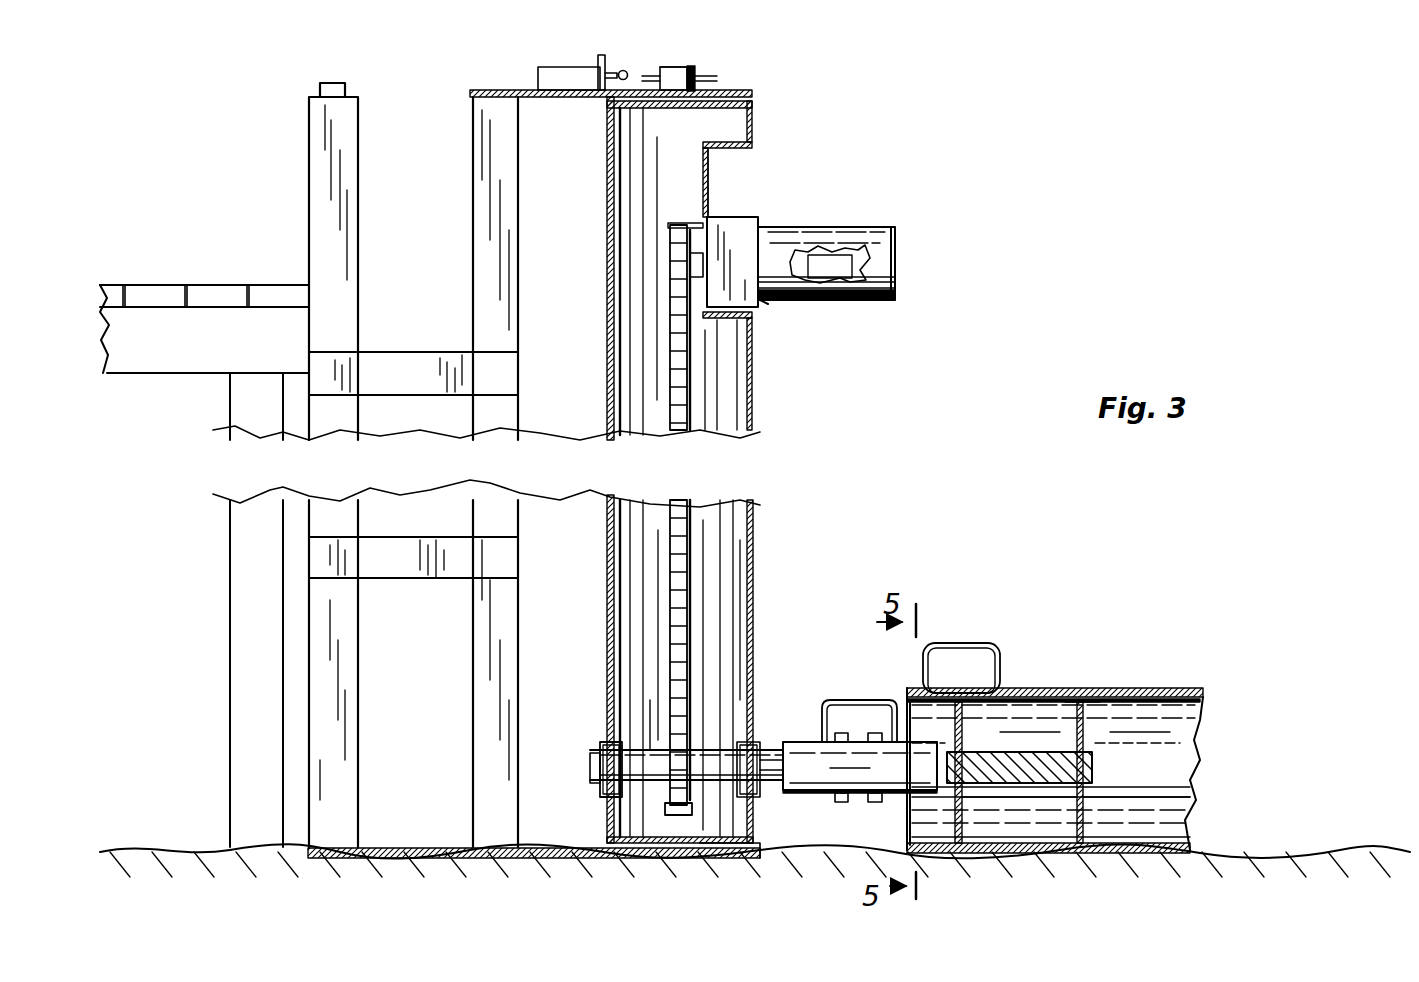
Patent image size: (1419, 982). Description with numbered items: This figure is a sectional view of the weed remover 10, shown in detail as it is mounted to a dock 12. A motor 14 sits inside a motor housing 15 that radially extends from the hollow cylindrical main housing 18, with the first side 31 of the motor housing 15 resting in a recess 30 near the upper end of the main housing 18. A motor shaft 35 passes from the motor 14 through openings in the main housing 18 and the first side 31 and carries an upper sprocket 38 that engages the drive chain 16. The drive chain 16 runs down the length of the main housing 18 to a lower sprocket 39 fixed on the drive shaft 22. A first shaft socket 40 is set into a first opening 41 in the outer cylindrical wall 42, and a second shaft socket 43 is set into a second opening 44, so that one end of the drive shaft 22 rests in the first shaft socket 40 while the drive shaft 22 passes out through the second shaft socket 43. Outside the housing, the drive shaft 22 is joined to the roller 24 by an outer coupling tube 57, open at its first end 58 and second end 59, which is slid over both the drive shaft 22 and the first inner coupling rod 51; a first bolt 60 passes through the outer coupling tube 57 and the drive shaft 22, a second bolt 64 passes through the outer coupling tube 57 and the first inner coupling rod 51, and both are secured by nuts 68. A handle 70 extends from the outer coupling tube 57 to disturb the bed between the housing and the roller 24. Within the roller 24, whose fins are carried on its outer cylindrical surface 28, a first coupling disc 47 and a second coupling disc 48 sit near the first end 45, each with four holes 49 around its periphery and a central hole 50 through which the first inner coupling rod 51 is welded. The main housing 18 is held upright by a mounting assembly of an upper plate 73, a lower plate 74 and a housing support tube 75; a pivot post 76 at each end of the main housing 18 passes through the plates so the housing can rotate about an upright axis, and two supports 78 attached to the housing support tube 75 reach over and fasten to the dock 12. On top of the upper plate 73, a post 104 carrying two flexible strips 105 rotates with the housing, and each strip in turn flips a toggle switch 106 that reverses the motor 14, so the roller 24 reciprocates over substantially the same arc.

The weed remover 10 is at (1070, 161).
The dock 12 is at (217, 297).
The motor 14 is at (835, 262).
The motor housing 15 is at (883, 226).
The drive chain 16 is at (690, 347).
The main housing 18 is at (752, 380).
The drive shaft 22 is at (657, 745).
The roller 24 is at (1198, 686).
The outer cylindrical surface 28 is at (1070, 690).
The recess 30 is at (713, 165).
The first side 31 is at (695, 213).
The motor shaft 35 is at (798, 273).
The upper sprocket 38 is at (688, 262).
The lower sprocket 39 is at (662, 810).
The first shaft socket 40 is at (612, 760).
The first opening 41 is at (603, 795).
The outer cylindrical wall 42 is at (755, 520).
The second shaft socket 43 is at (750, 777).
The second opening 44 is at (735, 857).
The first end 45 is at (907, 850).
The first coupling disc 47 is at (973, 797).
The second coupling disc 48 is at (1087, 797).
The holes 49 is at (967, 723).
The central hole 50 is at (957, 760).
The first inner coupling rod 51 is at (1058, 784).
The outer coupling tube 57 is at (818, 770).
The first end 58 is at (783, 748).
The second end 59 is at (948, 722).
The first bolt 60 is at (843, 723).
The second bolt 64 is at (877, 733).
The nuts 68 is at (873, 803).
The handle 70 is at (843, 733).
The upper plate 73 is at (733, 92).
The lower plate 74 is at (655, 856).
The housing support tube 75 is at (503, 153).
The pivot post 76 is at (690, 112).
The supports 78 is at (393, 372).
The post 104 is at (700, 78).
The flexible strips 105 is at (655, 67).
The toggle switch 106 is at (600, 92).